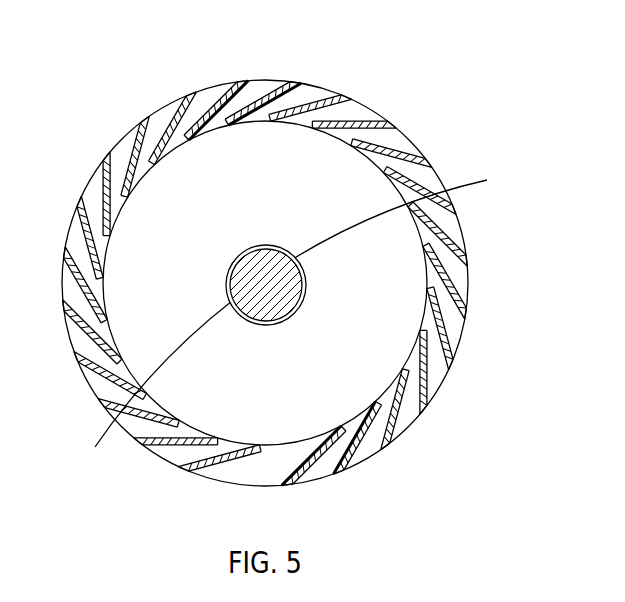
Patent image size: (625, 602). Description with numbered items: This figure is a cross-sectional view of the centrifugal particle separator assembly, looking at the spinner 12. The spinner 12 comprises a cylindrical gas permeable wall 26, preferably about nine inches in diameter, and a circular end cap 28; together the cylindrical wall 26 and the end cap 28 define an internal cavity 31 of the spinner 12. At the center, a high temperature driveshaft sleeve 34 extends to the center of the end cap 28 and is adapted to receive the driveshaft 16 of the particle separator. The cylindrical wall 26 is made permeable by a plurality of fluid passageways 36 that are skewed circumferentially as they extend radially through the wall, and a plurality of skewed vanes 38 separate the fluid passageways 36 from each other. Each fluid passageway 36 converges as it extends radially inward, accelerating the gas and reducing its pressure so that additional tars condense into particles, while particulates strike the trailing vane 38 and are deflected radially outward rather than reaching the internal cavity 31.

The spinner 12 is at (475, 80).
The driveshaft 16 is at (346, 248).
The cylindrical gas permeable wall 26 is at (448, 290).
The circular end cap 28 is at (120, 330).
The internal cavity 31 is at (173, 237).
The high temperature driveshaft sleeve 34 is at (282, 326).
The fluid passageways 36 is at (250, 90).
The skewed vanes 38 is at (130, 150).